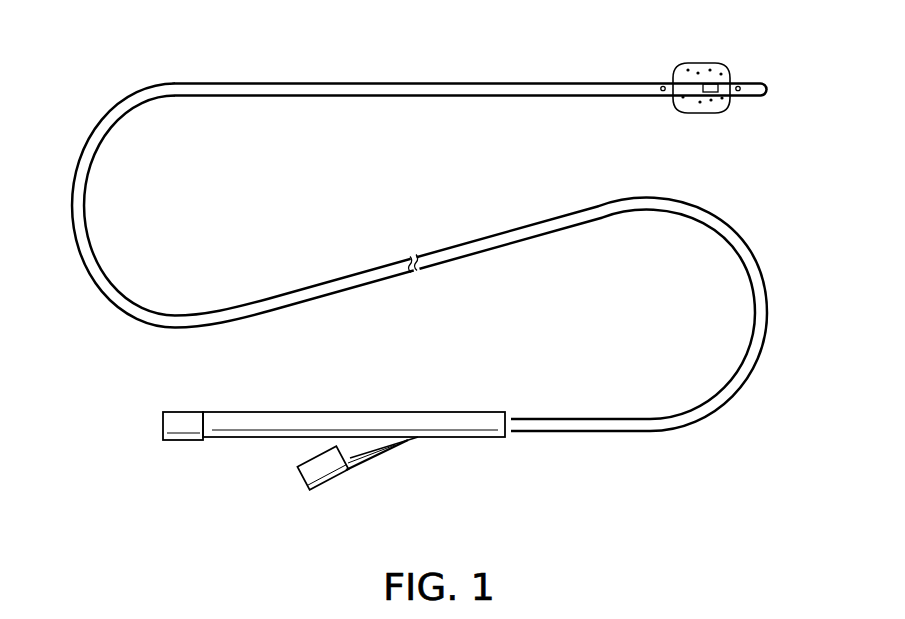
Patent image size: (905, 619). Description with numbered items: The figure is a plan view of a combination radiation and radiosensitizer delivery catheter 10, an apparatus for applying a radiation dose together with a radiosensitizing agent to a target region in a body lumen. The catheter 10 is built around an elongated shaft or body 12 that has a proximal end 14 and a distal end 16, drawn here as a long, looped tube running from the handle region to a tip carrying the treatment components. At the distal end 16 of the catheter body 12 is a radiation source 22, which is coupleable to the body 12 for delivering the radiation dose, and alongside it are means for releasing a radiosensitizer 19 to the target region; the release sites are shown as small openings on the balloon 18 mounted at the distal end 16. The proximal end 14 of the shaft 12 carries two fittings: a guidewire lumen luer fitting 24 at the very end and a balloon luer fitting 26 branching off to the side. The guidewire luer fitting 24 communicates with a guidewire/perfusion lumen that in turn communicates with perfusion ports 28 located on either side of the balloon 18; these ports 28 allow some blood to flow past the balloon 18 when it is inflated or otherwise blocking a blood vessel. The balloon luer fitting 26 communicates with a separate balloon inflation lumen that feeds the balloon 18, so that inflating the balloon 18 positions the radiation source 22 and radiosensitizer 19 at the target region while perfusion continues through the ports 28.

The combination radiation and radiosensitizer delivery catheter 10 is at (464, 272).
The shaft or body 12 is at (324, 284).
The proximal end 14 is at (444, 438).
The distal end 16 is at (568, 83).
The balloon 18 is at (689, 62).
The radiosensitizer 19 is at (691, 106).
The radiation source 22 is at (718, 85).
The guidewire lumen luer fitting 24 is at (190, 412).
The balloon luer fitting 26 is at (311, 490).
The perfusion ports 28 is at (665, 95).